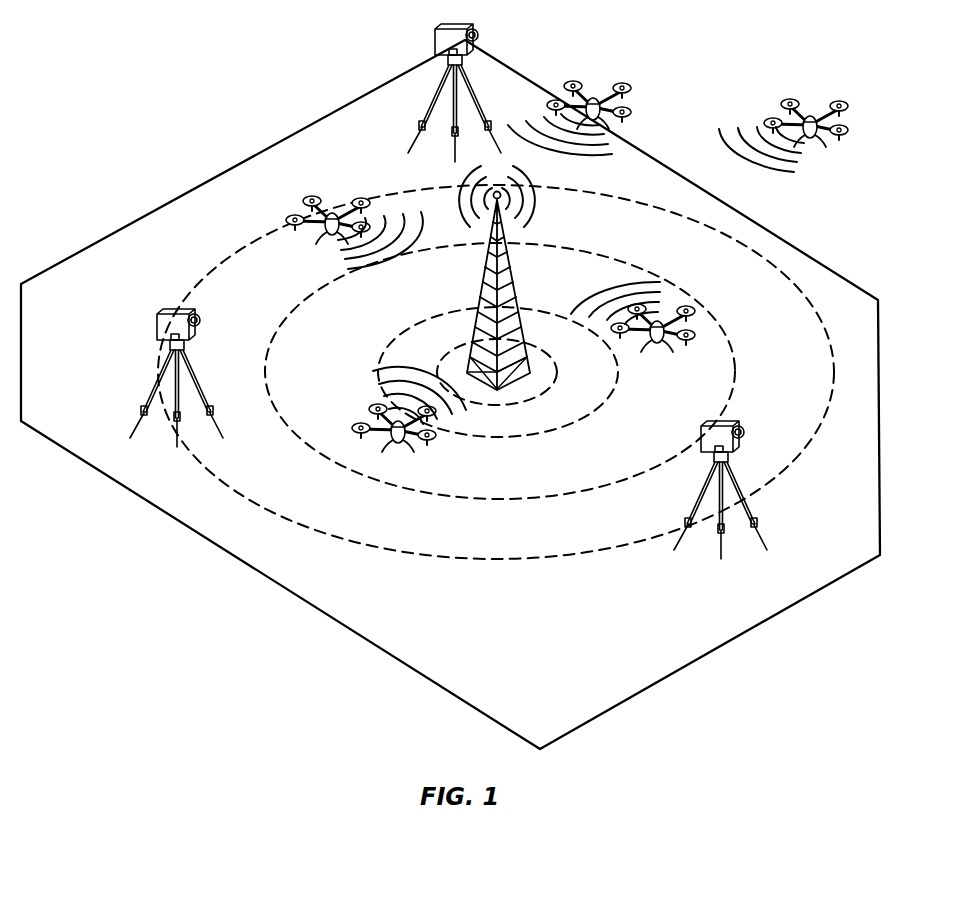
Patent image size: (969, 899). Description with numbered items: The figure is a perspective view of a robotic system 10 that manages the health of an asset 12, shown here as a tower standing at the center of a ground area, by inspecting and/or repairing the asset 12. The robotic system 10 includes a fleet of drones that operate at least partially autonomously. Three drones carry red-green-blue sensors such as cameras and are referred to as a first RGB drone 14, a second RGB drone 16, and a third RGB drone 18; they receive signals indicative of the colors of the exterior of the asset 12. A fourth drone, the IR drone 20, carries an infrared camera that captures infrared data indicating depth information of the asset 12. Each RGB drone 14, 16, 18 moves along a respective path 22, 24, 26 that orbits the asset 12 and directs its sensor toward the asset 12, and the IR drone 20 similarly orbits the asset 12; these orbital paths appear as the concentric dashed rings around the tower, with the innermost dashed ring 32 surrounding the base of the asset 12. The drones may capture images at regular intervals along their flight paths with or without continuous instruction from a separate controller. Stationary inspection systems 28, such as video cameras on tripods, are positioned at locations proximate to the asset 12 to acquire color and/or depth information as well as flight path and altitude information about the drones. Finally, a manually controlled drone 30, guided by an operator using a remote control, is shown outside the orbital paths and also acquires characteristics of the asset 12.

The robotic system 10 is at (690, 36).
The asset 12 is at (480, 289).
The first red-green-blue (RGB) drone 14 is at (400, 447).
The second RGB drone 16 is at (325, 240).
The third RGB drone 18 is at (598, 100).
The IR drone 20 is at (661, 346).
The path 22 is at (571, 423).
The path 24 is at (297, 303).
The path 26 is at (731, 235).
The inspection system 28 is at (455, 33).
The manually controlled drone 30 is at (808, 114).
The innermost boundary around tower 32 is at (558, 368).